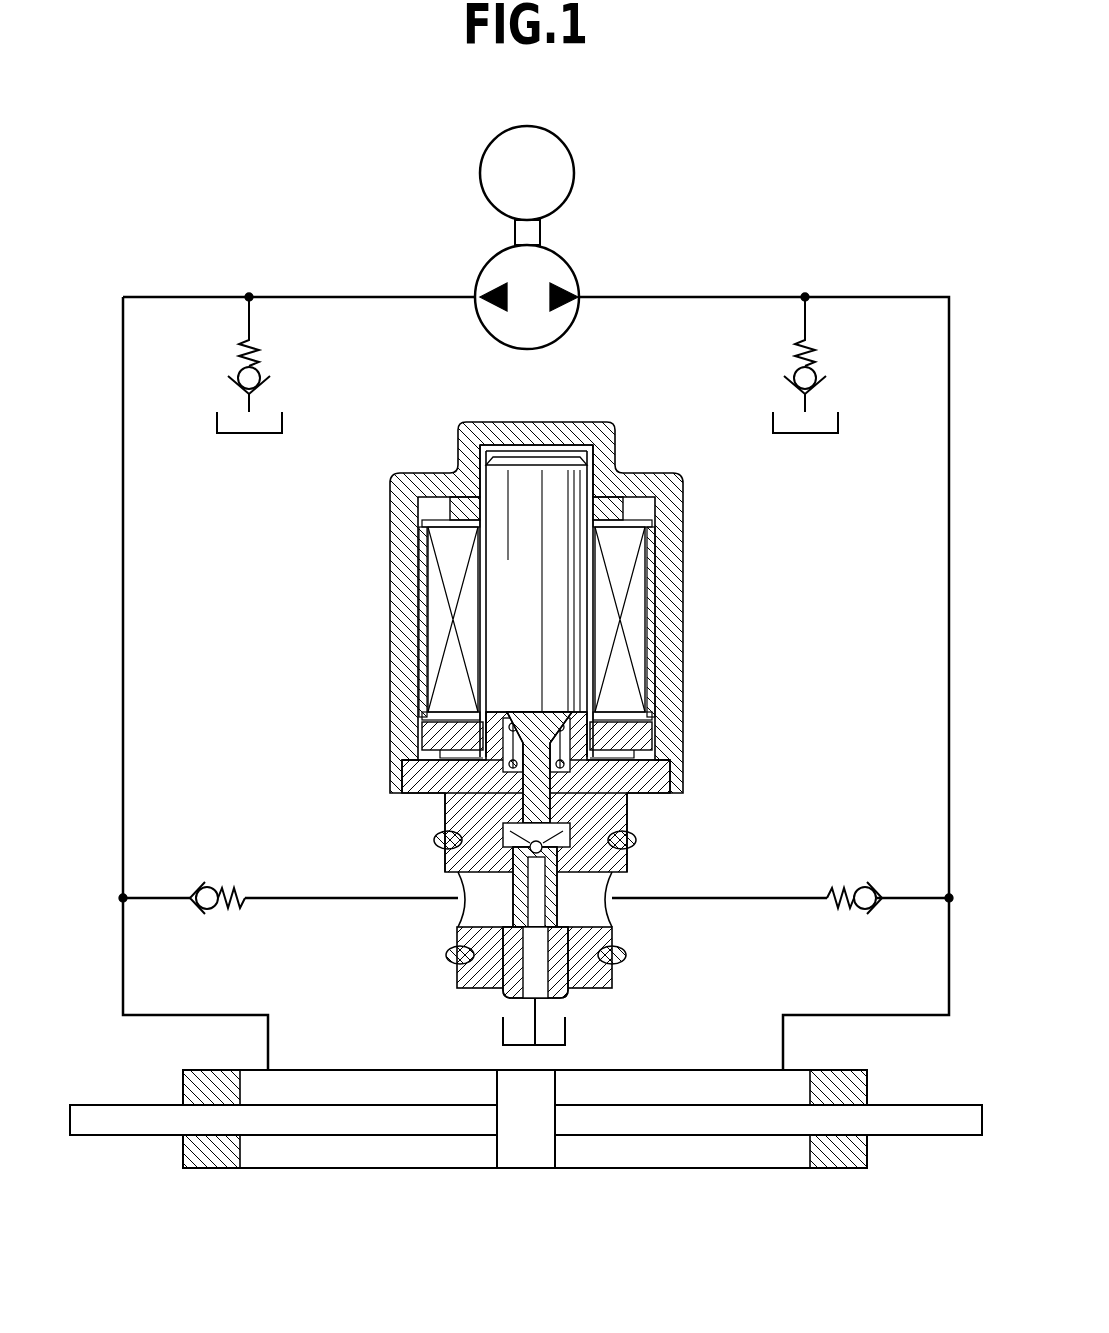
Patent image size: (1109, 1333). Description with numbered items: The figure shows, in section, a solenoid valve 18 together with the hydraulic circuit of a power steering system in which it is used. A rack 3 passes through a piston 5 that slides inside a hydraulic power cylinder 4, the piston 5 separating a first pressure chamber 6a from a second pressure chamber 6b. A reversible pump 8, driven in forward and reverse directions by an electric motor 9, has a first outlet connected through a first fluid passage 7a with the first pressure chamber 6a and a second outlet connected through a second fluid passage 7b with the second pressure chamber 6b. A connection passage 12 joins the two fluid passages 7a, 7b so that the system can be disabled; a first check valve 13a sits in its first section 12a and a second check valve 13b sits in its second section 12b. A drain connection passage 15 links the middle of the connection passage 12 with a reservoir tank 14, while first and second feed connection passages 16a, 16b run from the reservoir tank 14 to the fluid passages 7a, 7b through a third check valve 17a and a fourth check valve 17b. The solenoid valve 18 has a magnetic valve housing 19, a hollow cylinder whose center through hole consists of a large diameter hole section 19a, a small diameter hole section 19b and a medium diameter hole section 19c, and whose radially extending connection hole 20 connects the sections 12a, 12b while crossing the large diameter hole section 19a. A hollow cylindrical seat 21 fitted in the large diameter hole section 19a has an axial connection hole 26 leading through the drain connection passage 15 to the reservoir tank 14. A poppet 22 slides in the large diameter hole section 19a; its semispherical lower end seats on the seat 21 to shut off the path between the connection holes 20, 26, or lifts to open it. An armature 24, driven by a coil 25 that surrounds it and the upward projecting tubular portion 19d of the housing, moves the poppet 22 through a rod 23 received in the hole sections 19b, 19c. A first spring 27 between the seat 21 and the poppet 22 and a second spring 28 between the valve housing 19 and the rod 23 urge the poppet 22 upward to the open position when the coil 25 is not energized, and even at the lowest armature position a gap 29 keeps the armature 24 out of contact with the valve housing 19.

The rack 3 is at (118, 1120).
The hydraulic power cylinder 4 is at (790, 1170).
The piston 5 is at (531, 1155).
The first pressure chamber 6a is at (353, 1162).
The second pressure chamber 6b is at (707, 1160).
The first fluid passage 7a is at (123, 583).
The second fluid passage 7b is at (949, 543).
The reversible pump 8 is at (570, 264).
The electric motor 9 is at (574, 157).
The connection passage 12 is at (536, 933).
The first section of connection passage 12a is at (278, 903).
The second section of connection passage 12b is at (773, 905).
The first check valve 13a is at (233, 885).
The second check valve 13b is at (830, 885).
The reservoir tank 14 is at (262, 440).
The drain connection passage 15 is at (533, 1025).
The first feed connection passage 16a is at (252, 322).
The second feed connection passage 16b is at (808, 322).
The third check valve 17a is at (262, 371).
The fourth check valve 17b is at (818, 371).
The solenoid valve 18 is at (694, 640).
The valve housing 19 is at (627, 812).
The large diameter hole section 19a is at (470, 968).
The small diameter hole section 19b is at (520, 805).
The medium diameter hole section 19c is at (500, 765).
The tubular portion 19d is at (490, 737).
The connection hole 20 is at (477, 910).
The seat 21 is at (565, 977).
The poppet 22 is at (550, 897).
The rod 23 is at (562, 728).
The armature 24 is at (552, 483).
The coil 25 is at (627, 548).
The connection hole 26 is at (540, 945).
The first spring 27 is at (462, 868).
The second spring 28 is at (567, 745).
The gap 29 is at (470, 713).